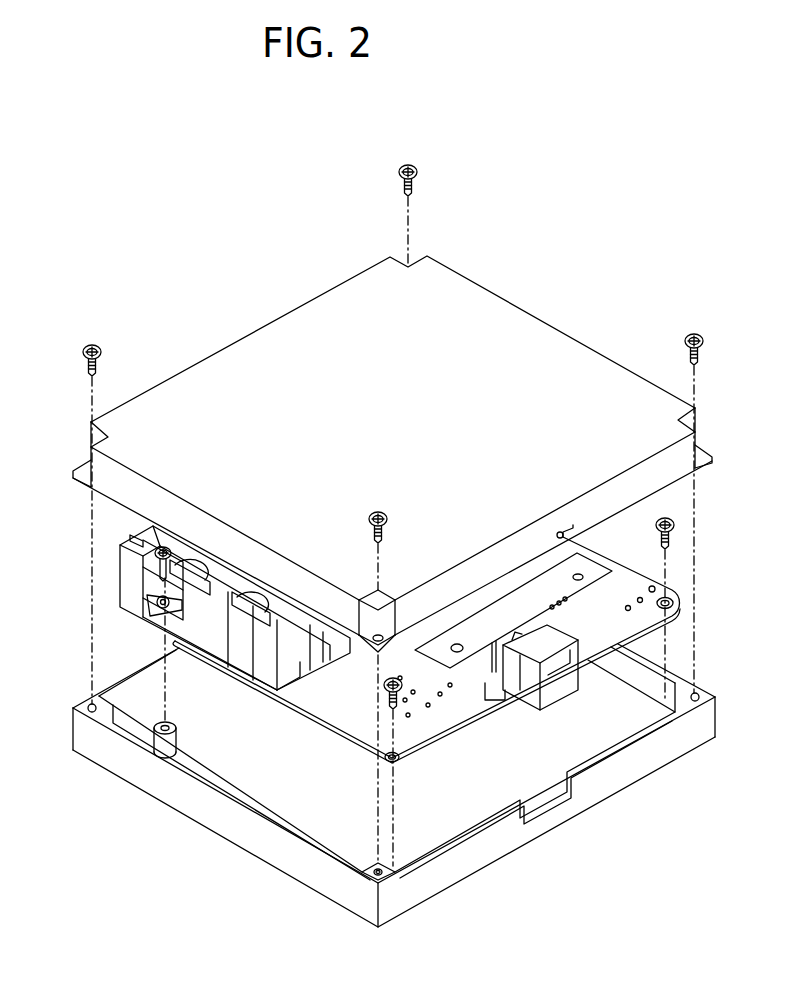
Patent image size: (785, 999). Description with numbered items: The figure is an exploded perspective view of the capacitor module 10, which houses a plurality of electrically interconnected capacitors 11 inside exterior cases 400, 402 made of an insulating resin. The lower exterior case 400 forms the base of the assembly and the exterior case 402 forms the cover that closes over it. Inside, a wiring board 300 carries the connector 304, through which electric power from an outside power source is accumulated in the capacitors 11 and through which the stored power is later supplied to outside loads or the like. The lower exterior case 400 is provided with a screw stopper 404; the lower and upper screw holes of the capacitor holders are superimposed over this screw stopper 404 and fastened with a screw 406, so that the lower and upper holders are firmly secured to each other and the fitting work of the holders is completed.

The capacitor module 10 is at (513, 286).
The capacitors 11 is at (295, 665).
The wiring board 300 is at (442, 735).
The connector 304 is at (560, 688).
The lower exterior case 400 is at (442, 873).
The exterior case 402 is at (595, 382).
The screw stopper 404 is at (167, 752).
The screw 406 is at (147, 560).